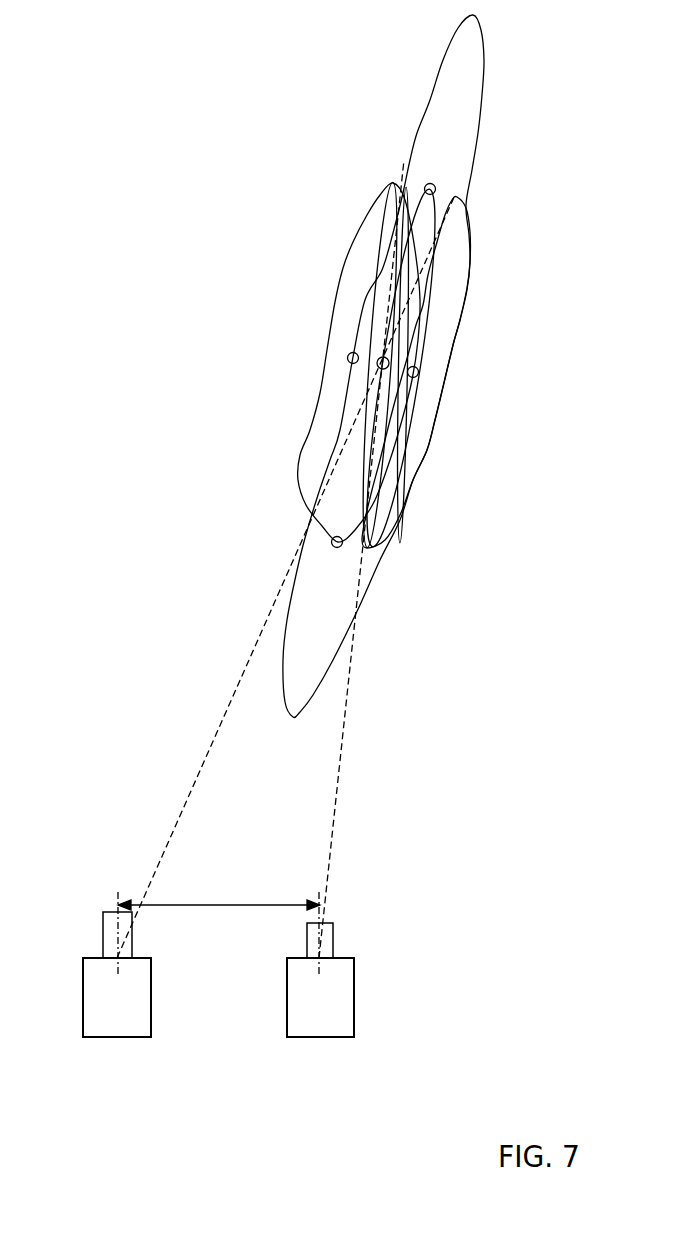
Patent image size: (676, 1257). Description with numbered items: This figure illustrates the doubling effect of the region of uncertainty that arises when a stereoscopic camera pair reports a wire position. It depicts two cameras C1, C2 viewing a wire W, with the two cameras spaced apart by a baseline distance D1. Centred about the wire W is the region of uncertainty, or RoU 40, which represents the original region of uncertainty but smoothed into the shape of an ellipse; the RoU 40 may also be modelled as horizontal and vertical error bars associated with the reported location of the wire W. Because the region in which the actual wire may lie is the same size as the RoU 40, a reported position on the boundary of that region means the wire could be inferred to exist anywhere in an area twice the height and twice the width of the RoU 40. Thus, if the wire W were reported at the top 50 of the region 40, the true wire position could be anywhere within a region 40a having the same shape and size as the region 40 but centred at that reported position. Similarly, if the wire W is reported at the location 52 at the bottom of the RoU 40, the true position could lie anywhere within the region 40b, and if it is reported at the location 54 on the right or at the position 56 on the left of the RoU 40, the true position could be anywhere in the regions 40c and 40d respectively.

The region of uncertainty (RoU) 40 is at (424, 338).
The region 40a is at (413, 133).
The region 40b is at (313, 657).
The region 40c is at (447, 366).
The region 40d is at (349, 355).
The top of the region 50 is at (435, 185).
The location at the bottom of the RoU 52 is at (337, 548).
The location on the right of the RoU 54 is at (418, 372).
The position on the left of the RoU 56 is at (348, 355).
The wire W is at (377, 365).
The camera C1 is at (112, 1020).
The camera C2 is at (340, 1020).
The camera separation distance D1 is at (219, 890).